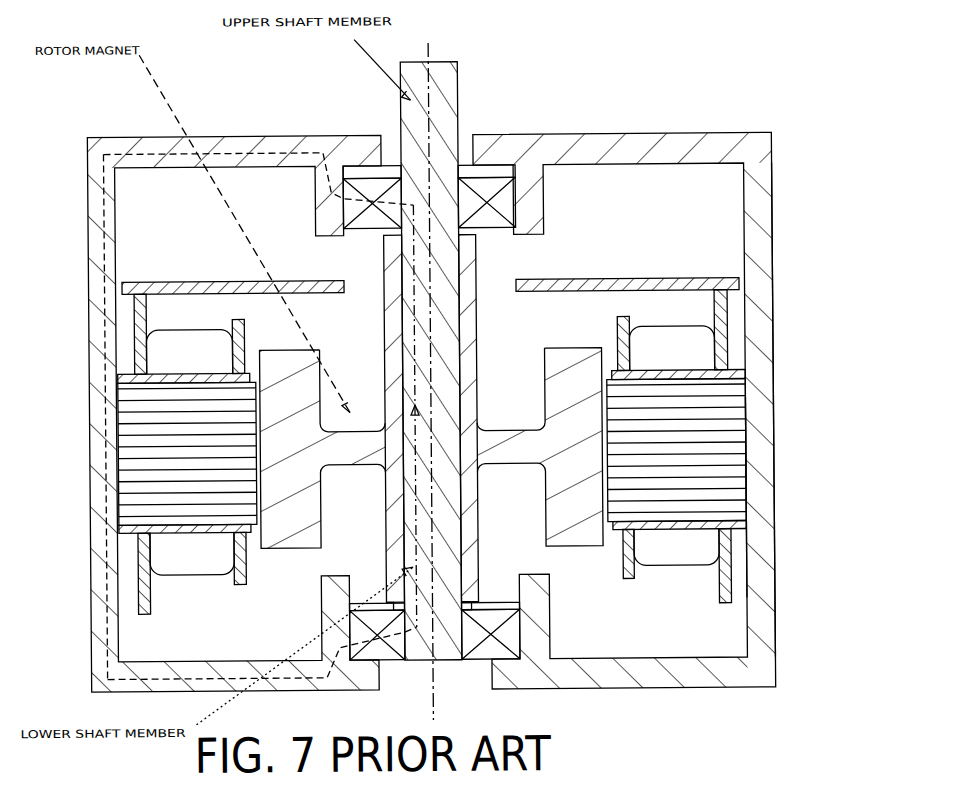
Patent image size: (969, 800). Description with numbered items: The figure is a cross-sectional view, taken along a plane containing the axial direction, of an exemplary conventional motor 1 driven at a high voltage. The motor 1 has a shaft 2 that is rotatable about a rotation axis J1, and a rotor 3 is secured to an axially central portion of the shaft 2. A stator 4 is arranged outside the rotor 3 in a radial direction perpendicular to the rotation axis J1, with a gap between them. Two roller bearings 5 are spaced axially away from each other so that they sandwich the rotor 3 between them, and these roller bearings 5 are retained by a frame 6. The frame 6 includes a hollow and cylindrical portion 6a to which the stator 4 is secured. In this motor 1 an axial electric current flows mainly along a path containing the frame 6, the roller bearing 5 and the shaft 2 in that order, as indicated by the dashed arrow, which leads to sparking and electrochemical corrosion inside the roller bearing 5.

The motor 1 is at (794, 162).
The shaft 2 is at (413, 112).
The rotor 3 is at (298, 539).
The stator 4 is at (160, 438).
The roller bearings 5 is at (495, 222).
The frame 6 is at (779, 579).
The hollow and cylindrical portion 6a is at (757, 551).
The rotation axis J1 is at (431, 44).